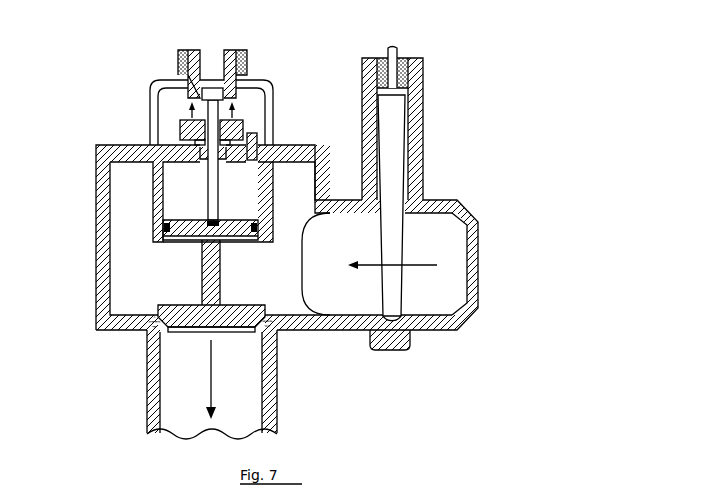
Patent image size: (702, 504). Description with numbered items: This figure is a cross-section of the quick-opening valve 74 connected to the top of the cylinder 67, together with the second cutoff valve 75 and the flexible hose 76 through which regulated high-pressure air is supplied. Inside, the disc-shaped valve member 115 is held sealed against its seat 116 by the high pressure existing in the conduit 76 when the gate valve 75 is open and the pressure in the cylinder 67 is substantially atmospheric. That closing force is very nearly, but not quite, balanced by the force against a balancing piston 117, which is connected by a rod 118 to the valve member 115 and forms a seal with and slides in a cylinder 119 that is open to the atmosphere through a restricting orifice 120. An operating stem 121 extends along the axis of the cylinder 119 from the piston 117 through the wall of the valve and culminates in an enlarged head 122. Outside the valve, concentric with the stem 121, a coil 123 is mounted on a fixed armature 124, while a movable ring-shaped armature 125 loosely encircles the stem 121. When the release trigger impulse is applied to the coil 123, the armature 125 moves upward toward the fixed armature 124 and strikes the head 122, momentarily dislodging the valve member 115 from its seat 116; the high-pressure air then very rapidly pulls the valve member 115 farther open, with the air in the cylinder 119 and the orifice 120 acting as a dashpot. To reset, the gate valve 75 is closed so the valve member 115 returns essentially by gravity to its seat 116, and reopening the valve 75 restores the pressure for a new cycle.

The cylinder 67 is at (193, 420).
The quick-opening valve 74 is at (96, 223).
The second cutoff valve 75 is at (412, 138).
The flexible hose 76 is at (453, 298).
The disc-shaped valve member 115 is at (187, 306).
The seat 116 is at (144, 337).
The balancing piston 117 is at (240, 241).
The rod 118 is at (214, 284).
The cylinder 119 is at (153, 229).
The restricting orifice 120 is at (257, 137).
The operating stem 121 is at (213, 183).
The enlarged head 122 is at (213, 93).
The coil 123 is at (235, 58).
The fixed armature 124 is at (193, 50).
The movable ring-shaped armature 125 is at (180, 128).